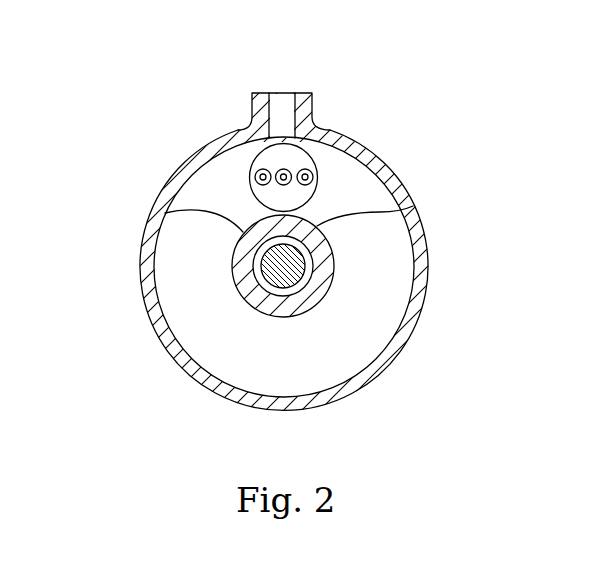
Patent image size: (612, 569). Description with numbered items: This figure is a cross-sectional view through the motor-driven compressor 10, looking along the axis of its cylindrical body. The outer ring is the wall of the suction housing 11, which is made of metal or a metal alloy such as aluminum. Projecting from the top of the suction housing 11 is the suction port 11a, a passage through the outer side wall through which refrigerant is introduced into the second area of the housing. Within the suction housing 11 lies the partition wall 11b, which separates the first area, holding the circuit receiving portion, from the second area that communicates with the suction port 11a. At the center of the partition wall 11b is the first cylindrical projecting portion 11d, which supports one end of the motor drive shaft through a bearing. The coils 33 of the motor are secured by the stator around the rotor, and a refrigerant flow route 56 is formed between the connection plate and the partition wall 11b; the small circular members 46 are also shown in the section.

The motor-driven compressor 10 is at (377, 143).
The suction housing 11 is at (148, 343).
The suction port 11a is at (282, 108).
The partition wall 11b is at (383, 308).
The first cylindrical projecting portion 11d is at (158, 220).
The coil 33 is at (410, 202).
The wires 46 is at (256, 173).
The refrigerant flow route 56 is at (312, 359).